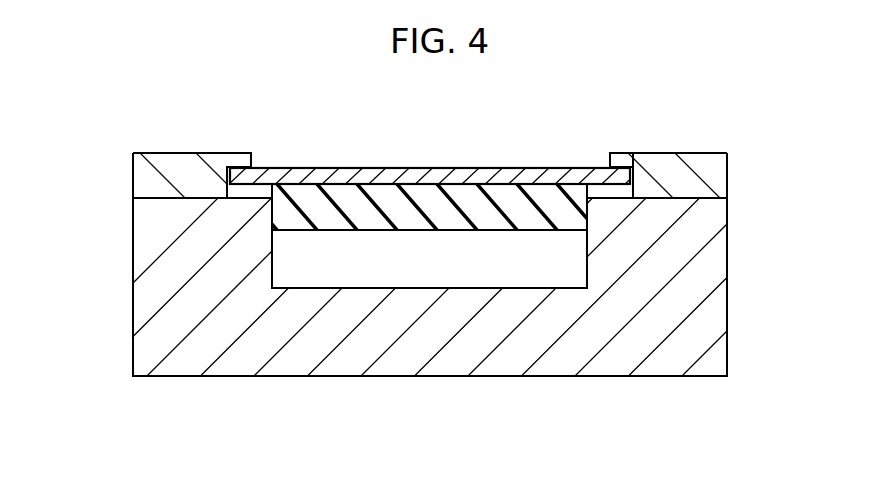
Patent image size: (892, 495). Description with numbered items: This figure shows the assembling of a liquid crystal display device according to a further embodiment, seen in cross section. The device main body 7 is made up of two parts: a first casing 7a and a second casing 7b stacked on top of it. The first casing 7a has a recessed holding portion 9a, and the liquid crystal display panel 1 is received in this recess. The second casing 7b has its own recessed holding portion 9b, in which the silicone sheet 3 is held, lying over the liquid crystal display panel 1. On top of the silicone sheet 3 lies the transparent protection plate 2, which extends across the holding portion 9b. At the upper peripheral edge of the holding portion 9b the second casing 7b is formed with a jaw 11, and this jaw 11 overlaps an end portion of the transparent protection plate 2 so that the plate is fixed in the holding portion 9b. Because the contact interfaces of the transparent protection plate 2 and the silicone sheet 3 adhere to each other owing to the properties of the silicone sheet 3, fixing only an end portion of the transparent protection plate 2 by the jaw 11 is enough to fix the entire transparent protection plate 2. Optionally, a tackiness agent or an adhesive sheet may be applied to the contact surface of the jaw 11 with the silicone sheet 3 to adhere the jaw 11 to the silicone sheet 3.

The liquid crystal display panel 1 is at (392, 280).
The transparent protection plate 2 is at (338, 172).
The silicone sheet 3 is at (398, 195).
The device main body 7 is at (84, 148).
The first casing 7a is at (150, 235).
The second casing 7b is at (150, 170).
The holding portion 9a is at (588, 262).
The holding portion 9b is at (630, 199).
The jaw 11 is at (617, 160).